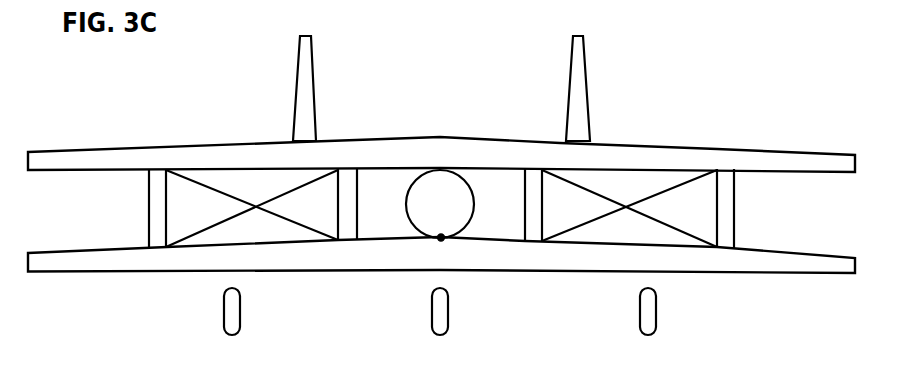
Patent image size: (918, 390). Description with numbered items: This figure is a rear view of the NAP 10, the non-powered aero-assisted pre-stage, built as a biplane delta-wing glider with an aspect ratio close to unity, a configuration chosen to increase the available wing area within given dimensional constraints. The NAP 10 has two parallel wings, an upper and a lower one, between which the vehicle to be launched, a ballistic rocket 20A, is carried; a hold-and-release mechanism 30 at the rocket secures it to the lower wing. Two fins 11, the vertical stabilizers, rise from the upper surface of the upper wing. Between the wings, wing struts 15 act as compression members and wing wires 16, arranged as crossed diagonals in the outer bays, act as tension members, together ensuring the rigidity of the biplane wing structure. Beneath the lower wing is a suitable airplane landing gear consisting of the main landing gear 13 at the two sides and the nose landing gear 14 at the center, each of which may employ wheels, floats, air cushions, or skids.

The non-powered aero-assisted pre-stage (NAP) 10 is at (717, 147).
The vertical stabilizer 11 is at (312, 73).
The main landing gear 13 is at (222, 317).
The nose landing gear 14 is at (432, 313).
The wing struts 15 is at (168, 193).
The wing wires 16 is at (313, 183).
The vehicle to be launched, a ballistic rocket 20A is at (468, 180).
The hold-and-release mechanism 30 is at (442, 239).